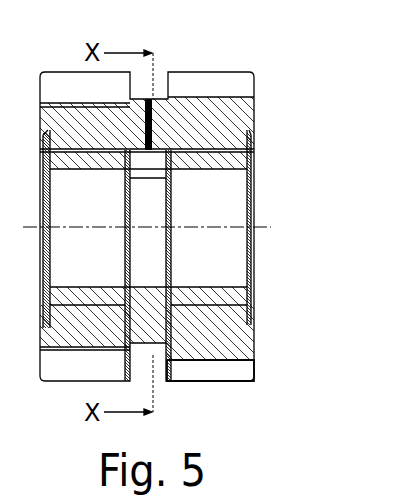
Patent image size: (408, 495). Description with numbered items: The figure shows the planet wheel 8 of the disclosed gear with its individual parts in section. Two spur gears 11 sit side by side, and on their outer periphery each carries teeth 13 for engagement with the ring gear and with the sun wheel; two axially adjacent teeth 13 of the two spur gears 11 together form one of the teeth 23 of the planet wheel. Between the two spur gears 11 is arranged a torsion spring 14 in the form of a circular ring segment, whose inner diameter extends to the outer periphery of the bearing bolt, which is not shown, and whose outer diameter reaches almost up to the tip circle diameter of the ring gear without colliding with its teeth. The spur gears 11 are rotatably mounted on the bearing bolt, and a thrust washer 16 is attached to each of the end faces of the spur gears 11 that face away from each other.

The planet wheel 8 is at (203, 58).
The spur gears 11 is at (233, 110).
The thrust washer 16 is at (244, 148).
The torsion spring 14 is at (155, 323).
The teeth 13 is at (220, 404).
The teeth of the planet wheel 23 is at (217, 372).